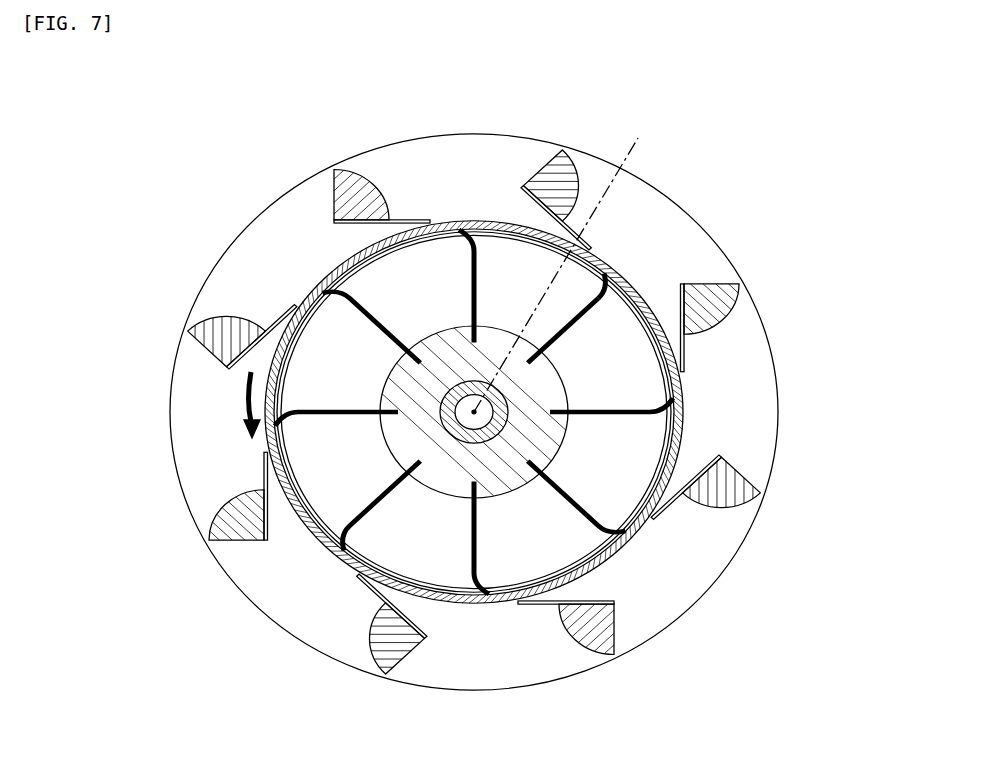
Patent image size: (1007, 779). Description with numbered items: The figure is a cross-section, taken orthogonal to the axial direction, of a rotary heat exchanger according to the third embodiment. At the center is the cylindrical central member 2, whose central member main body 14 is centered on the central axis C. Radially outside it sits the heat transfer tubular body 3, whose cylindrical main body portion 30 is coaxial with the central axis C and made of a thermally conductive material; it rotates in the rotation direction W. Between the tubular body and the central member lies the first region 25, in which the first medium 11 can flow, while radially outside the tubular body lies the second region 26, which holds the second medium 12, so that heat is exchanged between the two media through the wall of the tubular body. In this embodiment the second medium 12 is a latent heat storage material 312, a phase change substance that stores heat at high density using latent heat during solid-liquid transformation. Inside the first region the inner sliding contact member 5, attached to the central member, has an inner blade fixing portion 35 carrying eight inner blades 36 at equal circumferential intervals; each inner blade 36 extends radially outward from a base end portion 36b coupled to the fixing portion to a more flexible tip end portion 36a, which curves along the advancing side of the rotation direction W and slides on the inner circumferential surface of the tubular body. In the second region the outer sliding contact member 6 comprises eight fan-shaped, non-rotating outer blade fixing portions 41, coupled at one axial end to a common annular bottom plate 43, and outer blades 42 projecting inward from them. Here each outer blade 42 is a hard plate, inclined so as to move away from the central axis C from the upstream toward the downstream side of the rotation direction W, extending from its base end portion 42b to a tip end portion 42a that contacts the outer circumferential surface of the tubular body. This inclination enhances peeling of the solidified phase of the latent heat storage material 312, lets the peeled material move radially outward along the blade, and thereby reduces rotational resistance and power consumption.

The central member 2 is at (503, 447).
The heat transfer tubular body 3 is at (688, 397).
The inner sliding contact member 5 is at (521, 413).
The outer sliding contact member 6 is at (533, 172).
The first medium 11 is at (413, 563).
The second medium 12 is at (735, 528).
The central member main body 14 is at (462, 440).
The first region 25 is at (387, 543).
The second region 26 is at (698, 562).
The main body portion 30 is at (683, 428).
The inner blade fixing portion 35 is at (443, 340).
The inner blade 36 is at (475, 260).
The tip end portion 36a is at (543, 355).
The base end portion 36b is at (553, 382).
The outer blade fixing portion 41 is at (212, 323).
The outer blade 42 is at (293, 307).
The tip end portion 42a is at (257, 455).
The base end portion 42b is at (253, 533).
The bottom plate 43 is at (170, 380).
The latent heat storage material 312 is at (653, 605).
The central axis C is at (562, 262).
The rotation direction W is at (247, 403).